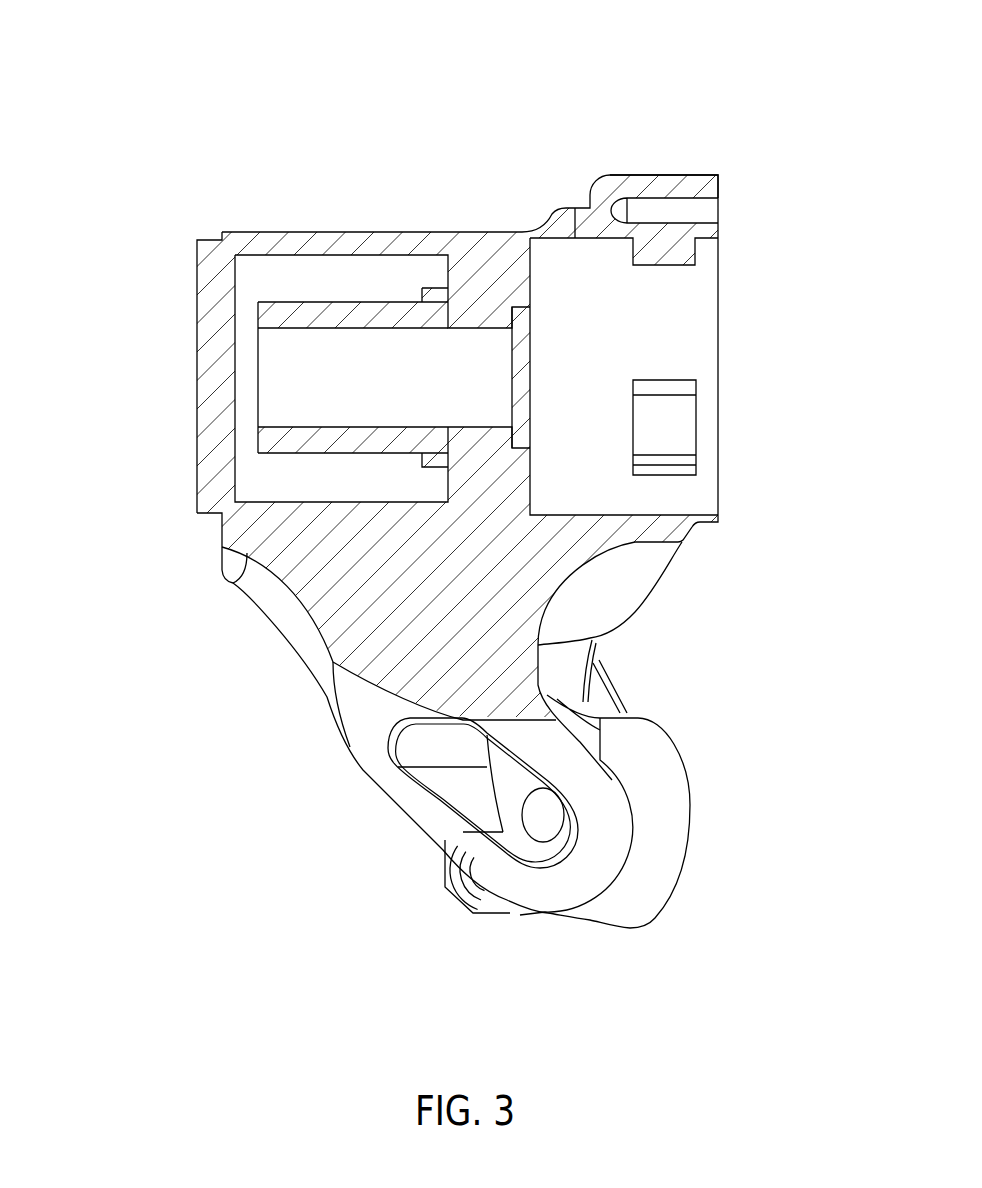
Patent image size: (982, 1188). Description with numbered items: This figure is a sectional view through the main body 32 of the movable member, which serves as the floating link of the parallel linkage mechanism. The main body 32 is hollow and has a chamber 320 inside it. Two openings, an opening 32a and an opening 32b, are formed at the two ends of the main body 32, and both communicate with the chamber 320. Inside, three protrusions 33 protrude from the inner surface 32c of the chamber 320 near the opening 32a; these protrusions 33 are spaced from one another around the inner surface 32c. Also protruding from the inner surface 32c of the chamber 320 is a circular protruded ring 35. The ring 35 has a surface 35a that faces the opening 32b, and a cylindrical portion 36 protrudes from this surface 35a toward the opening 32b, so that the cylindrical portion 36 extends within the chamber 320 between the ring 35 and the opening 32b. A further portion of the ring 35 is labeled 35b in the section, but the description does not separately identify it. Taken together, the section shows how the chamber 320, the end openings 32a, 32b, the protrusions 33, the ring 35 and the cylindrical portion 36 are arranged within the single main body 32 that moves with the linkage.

The main body 32 is at (699, 175).
The opening 32a is at (721, 252).
The opening 32b is at (197, 302).
The inner surface 32c is at (576, 207).
The protrusions 33 is at (677, 265).
The circular protruded ring 35 is at (485, 275).
The surface 35a is at (447, 278).
The shoulder 35b is at (532, 257).
The cylindrical portion 36 is at (313, 300).
The chamber 320 is at (582, 412).